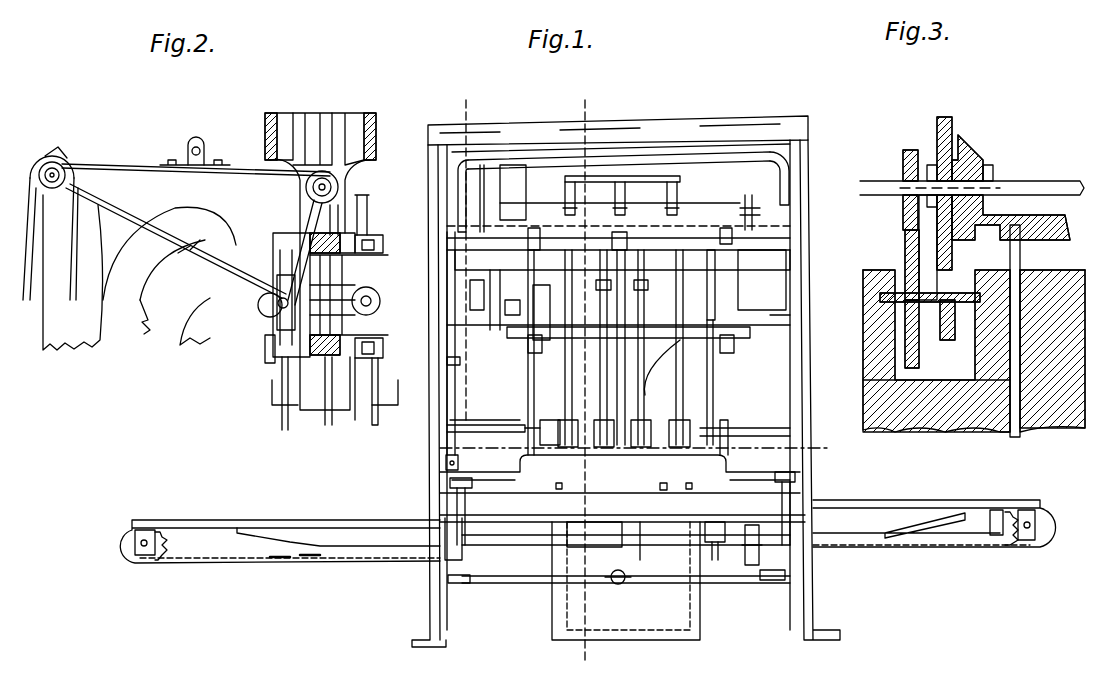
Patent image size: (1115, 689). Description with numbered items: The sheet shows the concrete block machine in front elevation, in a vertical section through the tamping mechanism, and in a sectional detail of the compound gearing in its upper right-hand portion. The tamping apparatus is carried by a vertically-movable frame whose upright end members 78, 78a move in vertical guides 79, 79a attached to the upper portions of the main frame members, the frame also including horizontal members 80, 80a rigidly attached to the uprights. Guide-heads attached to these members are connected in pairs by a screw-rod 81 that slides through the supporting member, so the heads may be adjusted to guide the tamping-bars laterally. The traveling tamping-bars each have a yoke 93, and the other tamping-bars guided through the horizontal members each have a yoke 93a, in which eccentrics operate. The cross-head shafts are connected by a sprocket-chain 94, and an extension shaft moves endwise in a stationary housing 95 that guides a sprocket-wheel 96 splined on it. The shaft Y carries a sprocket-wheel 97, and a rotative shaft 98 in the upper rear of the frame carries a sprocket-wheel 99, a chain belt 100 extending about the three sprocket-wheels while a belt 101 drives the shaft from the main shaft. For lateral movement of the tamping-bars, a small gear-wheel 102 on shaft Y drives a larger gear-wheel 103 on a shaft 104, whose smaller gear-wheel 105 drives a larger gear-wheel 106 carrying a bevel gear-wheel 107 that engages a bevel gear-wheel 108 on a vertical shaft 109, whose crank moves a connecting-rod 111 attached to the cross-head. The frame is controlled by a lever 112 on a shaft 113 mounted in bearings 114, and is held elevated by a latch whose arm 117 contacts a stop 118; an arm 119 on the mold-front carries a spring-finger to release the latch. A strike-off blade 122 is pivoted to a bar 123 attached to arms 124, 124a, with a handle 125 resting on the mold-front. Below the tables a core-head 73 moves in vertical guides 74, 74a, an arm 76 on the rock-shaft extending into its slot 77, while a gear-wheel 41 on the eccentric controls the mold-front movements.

In FIG. 2, the rotative shaft 98 is at (56, 170).
In FIG. 2, the sprocket-wheel 99 is at (72, 186).
In FIG. 2, the chain belt 100 is at (135, 235).
In FIG. 1, the chain belt 100 is at (458, 175).
In FIG. 2, the belt 101 is at (76, 268).
In FIG. 1, the belt 101 is at (512, 180).
In FIG. 2, the shaft 113 is at (196, 140).
In FIG. 2, the bearings 114 is at (186, 142).
In FIG. 2, the sprocket-wheel 97 is at (300, 165).
In FIG. 2, the vertical guide 79a is at (314, 125).
In FIG. 1, the vertical guide 79a is at (792, 252).
In FIG. 2, the yoke 93a is at (340, 185).
In FIG. 1, the yoke 93a is at (620, 176).
In FIG. 2, the screw-rod 81 is at (370, 225).
In FIG. 2, the upright end member 78a is at (318, 205).
In FIG. 1, the upright end member 78a is at (790, 275).
In FIG. 2, the horizontal member 80 is at (273, 250).
In FIG. 1, the horizontal member 80 is at (455, 258).
In FIG. 3, the horizontal member 80 is at (950, 420).
In FIG. 2, the yoke 93 is at (273, 280).
In FIG. 1, the yoke 93 is at (629, 348).
In FIG. 2, the sprocket-wheel 96 is at (210, 296).
In FIG. 2, the horizontal member 80a is at (265, 345).
In FIG. 1, the horizontal member 80a is at (760, 335).
In FIG. 2, the sprocket-chain 94 is at (355, 420).
In FIG. 1, the bevel gear-wheel 107 is at (768, 172).
In FIG. 3, the bevel gear-wheel 107 is at (975, 150).
In FIG. 1, the controlling handle or lever 112 is at (792, 175).
In FIG. 1, the vertical guide 79 is at (447, 205).
In FIG. 1, the upright end member 78 is at (455, 272).
In FIG. 1, the housing 95 is at (468, 290).
In FIG. 1, the small gear-wheel 102 is at (738, 208).
In FIG. 3, the small gear-wheel 102 is at (903, 160).
In FIG. 1, the connecting bevel gear-wheel 108 is at (760, 218).
In FIG. 3, the connecting bevel gear-wheel 108 is at (1025, 215).
In FIG. 1, the vertical shaft 109 is at (790, 290).
In FIG. 3, the vertical shaft 109 is at (1020, 255).
In FIG. 1, the connecting-rod 111 is at (790, 328).
In FIG. 1, the stop 118 is at (460, 362).
In FIG. 1, the arm 117 is at (456, 418).
In FIG. 1, the arm 124 is at (447, 428).
In FIG. 1, the arm 124a is at (800, 430).
In FIG. 1, the strike-off blade 122 is at (555, 412).
In FIG. 1, the bar 123 is at (734, 428).
In FIG. 1, the arm 119 is at (446, 460).
In FIG. 1, the handle 125 is at (690, 480).
In FIG. 1, the slot 77 is at (616, 534).
In FIG. 1, the vertical guide 74 is at (555, 612).
In FIG. 1, the vertical guide 74a is at (695, 608).
In FIG. 1, the arm 76 is at (620, 584).
In FIG. 1, the core-head 73 is at (672, 558).
In FIG. 1, the gear-wheel 41 is at (752, 565).
In FIG. 3, the connecting gear-wheel 106 is at (942, 117).
In FIG. 3, the connecting gear-wheel 103 is at (905, 245).
In FIG. 3, the gear-wheel 105 is at (945, 280).
In FIG. 3, the shaft 104 is at (925, 330).